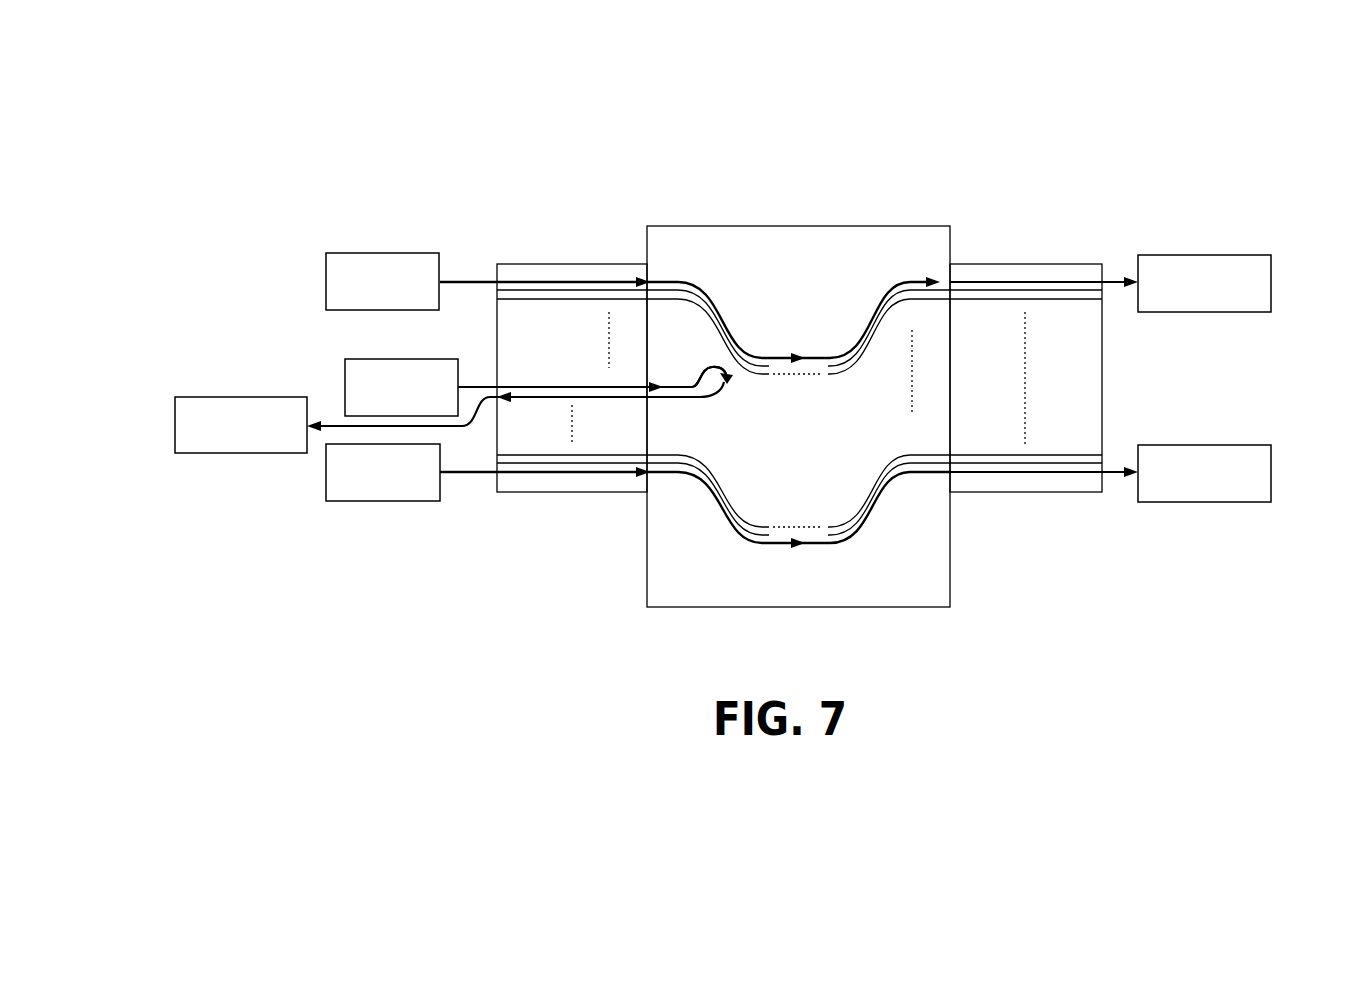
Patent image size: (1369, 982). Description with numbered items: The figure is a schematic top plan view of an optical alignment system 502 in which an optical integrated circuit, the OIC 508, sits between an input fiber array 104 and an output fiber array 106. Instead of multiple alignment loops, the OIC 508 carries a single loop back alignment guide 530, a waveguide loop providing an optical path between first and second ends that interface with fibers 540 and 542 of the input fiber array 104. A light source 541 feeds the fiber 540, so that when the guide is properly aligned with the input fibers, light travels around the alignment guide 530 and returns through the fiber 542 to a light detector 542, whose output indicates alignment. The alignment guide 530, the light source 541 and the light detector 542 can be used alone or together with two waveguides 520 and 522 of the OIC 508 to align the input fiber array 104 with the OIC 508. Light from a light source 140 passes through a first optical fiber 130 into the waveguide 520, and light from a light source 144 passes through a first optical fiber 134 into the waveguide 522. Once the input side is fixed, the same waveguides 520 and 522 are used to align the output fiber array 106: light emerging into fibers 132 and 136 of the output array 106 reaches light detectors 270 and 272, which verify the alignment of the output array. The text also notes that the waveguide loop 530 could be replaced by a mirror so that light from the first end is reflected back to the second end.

The system 502 is at (446, 100).
The input fiber array 104 is at (637, 263).
The output fiber array 106 is at (965, 264).
The OIC 508 is at (873, 226).
The first optical fiber 130 is at (560, 281).
The fiber 132 is at (1052, 282).
The first optical fiber 134 is at (525, 474).
The fiber 136 is at (965, 473).
The waveguide 520 is at (724, 315).
The waveguide 522 is at (787, 545).
The light source 140 is at (325, 285).
The light source 144 is at (345, 503).
The light source 541 is at (368, 359).
The fiber 540 is at (587, 386).
The loop back alignment guide 530 is at (736, 411).
The fiber and light detector 542 is at (195, 397).
The light detector 270 is at (1250, 255).
The light detector 272 is at (1250, 502).